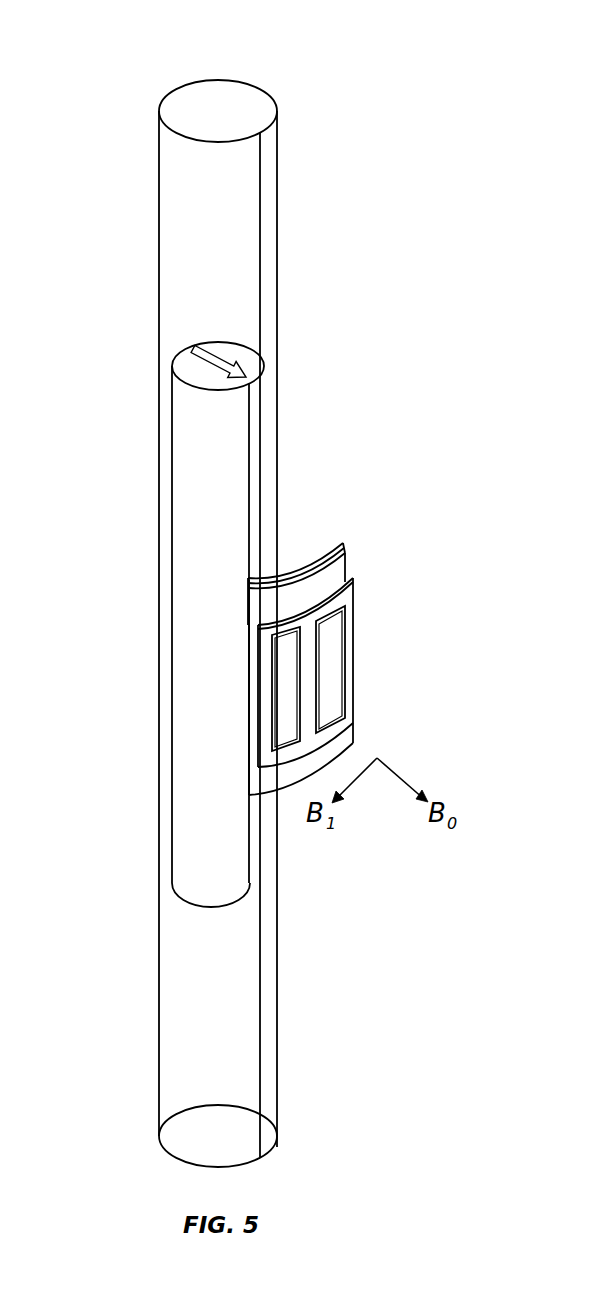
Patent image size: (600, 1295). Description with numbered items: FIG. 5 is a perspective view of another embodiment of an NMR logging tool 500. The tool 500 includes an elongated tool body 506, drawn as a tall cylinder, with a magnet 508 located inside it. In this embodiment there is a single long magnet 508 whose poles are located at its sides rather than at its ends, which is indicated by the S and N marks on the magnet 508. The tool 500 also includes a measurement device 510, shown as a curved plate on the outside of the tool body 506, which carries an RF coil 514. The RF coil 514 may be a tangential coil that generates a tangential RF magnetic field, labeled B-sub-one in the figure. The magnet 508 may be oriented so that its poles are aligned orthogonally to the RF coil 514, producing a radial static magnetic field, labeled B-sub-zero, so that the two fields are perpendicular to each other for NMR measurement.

The NMR logging tool 500 is at (340, 59).
The tool body 506 is at (172, 190).
The magnet 508 is at (198, 418).
The measurement device 510 is at (339, 541).
The RF coil 514 is at (357, 590).